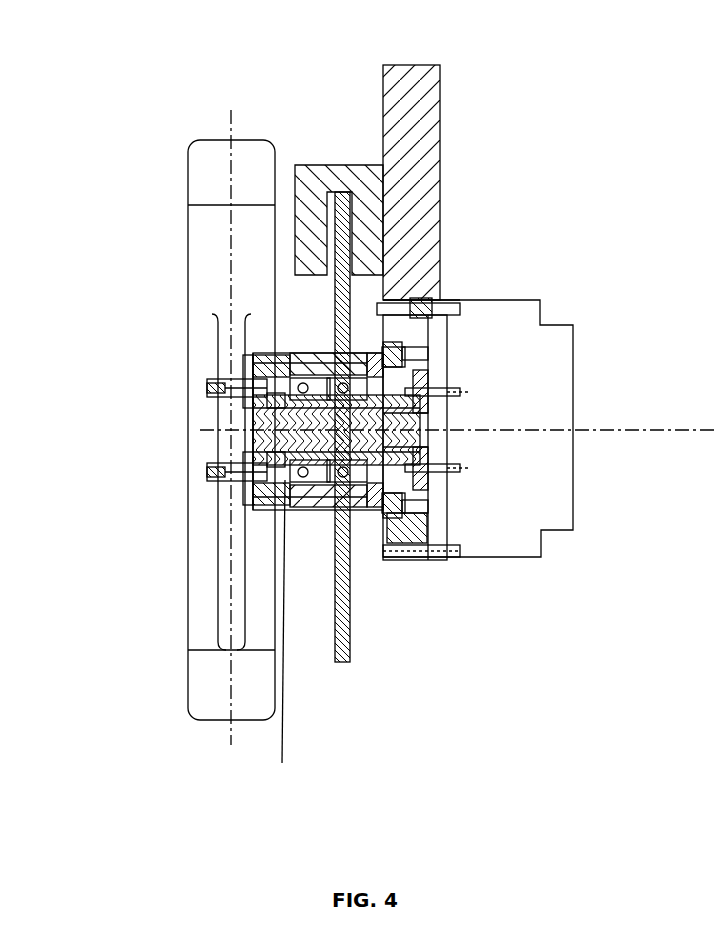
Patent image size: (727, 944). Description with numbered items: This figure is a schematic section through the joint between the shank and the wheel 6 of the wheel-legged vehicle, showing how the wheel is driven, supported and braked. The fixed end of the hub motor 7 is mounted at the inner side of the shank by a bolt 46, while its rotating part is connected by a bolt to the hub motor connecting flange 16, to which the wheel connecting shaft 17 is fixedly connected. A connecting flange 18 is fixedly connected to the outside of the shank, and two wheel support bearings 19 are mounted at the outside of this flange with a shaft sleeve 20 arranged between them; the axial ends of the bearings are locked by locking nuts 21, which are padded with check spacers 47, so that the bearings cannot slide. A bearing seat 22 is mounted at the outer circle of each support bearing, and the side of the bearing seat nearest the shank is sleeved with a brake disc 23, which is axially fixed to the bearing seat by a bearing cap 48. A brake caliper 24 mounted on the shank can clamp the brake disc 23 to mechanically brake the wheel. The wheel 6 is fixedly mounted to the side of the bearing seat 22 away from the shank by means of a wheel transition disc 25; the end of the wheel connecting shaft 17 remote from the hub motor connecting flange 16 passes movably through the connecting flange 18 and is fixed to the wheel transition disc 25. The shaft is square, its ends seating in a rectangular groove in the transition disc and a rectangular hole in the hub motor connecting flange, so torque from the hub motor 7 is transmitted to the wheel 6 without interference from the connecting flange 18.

The wheel 6 is at (230, 187).
The hub motor 7 is at (507, 443).
The hub motor connecting flange 16 is at (447, 493).
The wheel connecting shaft 17 is at (447, 447).
The connecting flange 18 is at (455, 540).
The wheel support bearing 19 is at (385, 507).
The shaft sleeve 20 is at (348, 507).
The locking nut 21 is at (268, 490).
The bearing seat 22 is at (317, 507).
The brake disc 23 is at (337, 185).
The brake caliper 24 is at (357, 180).
The wheel transition disc 25 is at (265, 480).
The bolt 46 is at (422, 312).
The check spacer 47 is at (277, 460).
The bearing cap 48 is at (352, 497).